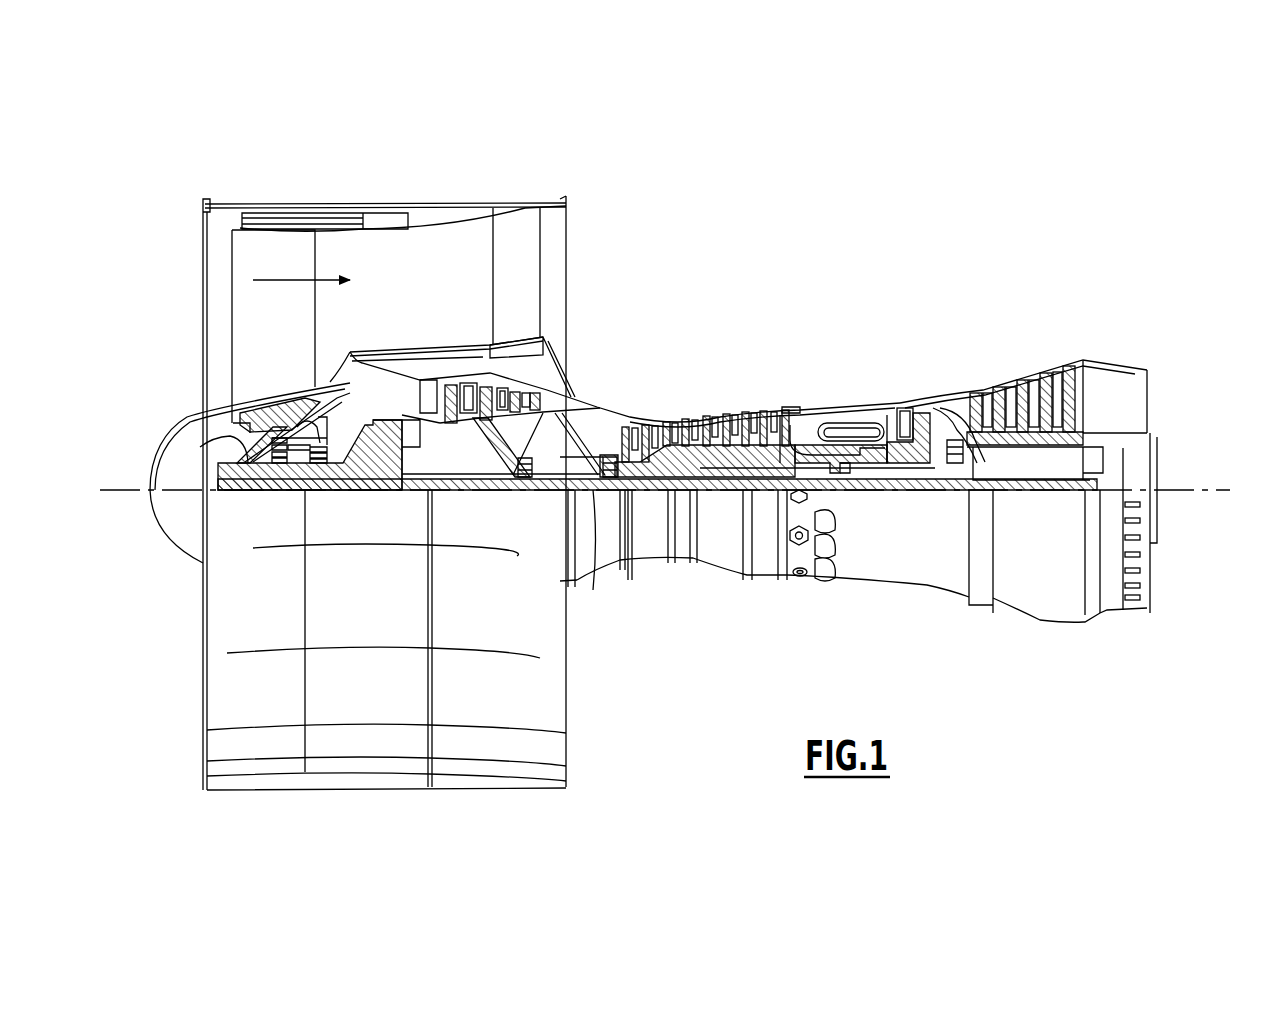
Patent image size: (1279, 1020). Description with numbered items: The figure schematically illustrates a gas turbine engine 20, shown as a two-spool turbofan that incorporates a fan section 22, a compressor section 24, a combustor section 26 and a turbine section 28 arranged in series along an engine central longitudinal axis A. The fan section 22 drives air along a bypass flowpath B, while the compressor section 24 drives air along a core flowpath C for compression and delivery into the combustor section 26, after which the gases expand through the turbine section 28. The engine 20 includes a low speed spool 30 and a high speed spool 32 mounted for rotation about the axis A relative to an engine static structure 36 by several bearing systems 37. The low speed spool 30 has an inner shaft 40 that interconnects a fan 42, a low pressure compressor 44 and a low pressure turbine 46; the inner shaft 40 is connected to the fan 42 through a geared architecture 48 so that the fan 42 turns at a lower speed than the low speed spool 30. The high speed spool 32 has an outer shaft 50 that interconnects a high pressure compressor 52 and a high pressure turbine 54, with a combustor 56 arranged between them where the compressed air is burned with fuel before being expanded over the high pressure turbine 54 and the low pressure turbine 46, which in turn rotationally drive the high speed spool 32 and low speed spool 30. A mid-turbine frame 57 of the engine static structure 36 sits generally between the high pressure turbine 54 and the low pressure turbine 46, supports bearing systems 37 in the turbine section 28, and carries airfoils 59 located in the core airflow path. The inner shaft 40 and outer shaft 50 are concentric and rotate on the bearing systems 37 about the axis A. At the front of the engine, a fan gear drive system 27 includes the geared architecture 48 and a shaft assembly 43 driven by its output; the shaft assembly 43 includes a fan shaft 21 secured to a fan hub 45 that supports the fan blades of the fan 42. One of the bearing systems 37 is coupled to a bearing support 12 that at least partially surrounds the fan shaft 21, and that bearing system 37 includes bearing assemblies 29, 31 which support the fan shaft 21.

The gas turbine engine 20 is at (845, 255).
The fan section 22 is at (315, 197).
The compressor section 24 is at (617, 397).
The combustor section 26 is at (838, 385).
The turbine section 28 is at (983, 347).
The bearing support 12 is at (402, 450).
The fan shaft 21 is at (330, 493).
The fan gear drive system 27 is at (185, 400).
The bearing assembly 29 is at (313, 423).
The low speed spool 30 is at (723, 500).
The bearing assembly 31 is at (280, 466).
The high speed spool 32 is at (763, 455).
The engine static structure 36 is at (764, 582).
The bearing systems 37 is at (250, 487).
The inner shaft 40 is at (596, 594).
The fan 42 is at (288, 333).
The shaft assembly 43 is at (283, 503).
The low pressure compressor 44 is at (500, 387).
The fan hub 45 is at (243, 447).
The low pressure turbine 46 is at (1033, 360).
The geared architecture 48 is at (392, 470).
The outer shaft 50 is at (842, 468).
The high pressure compressor 52 is at (690, 445).
The high pressure turbine 54 is at (905, 407).
The combustor 56 is at (840, 430).
The mid-turbine frame 57 is at (945, 397).
The airfoils 59 is at (977, 453).
The engine central longitudinal axis A is at (1238, 490).
The bypass flowpath B is at (287, 277).
The core flowpath C is at (387, 383).